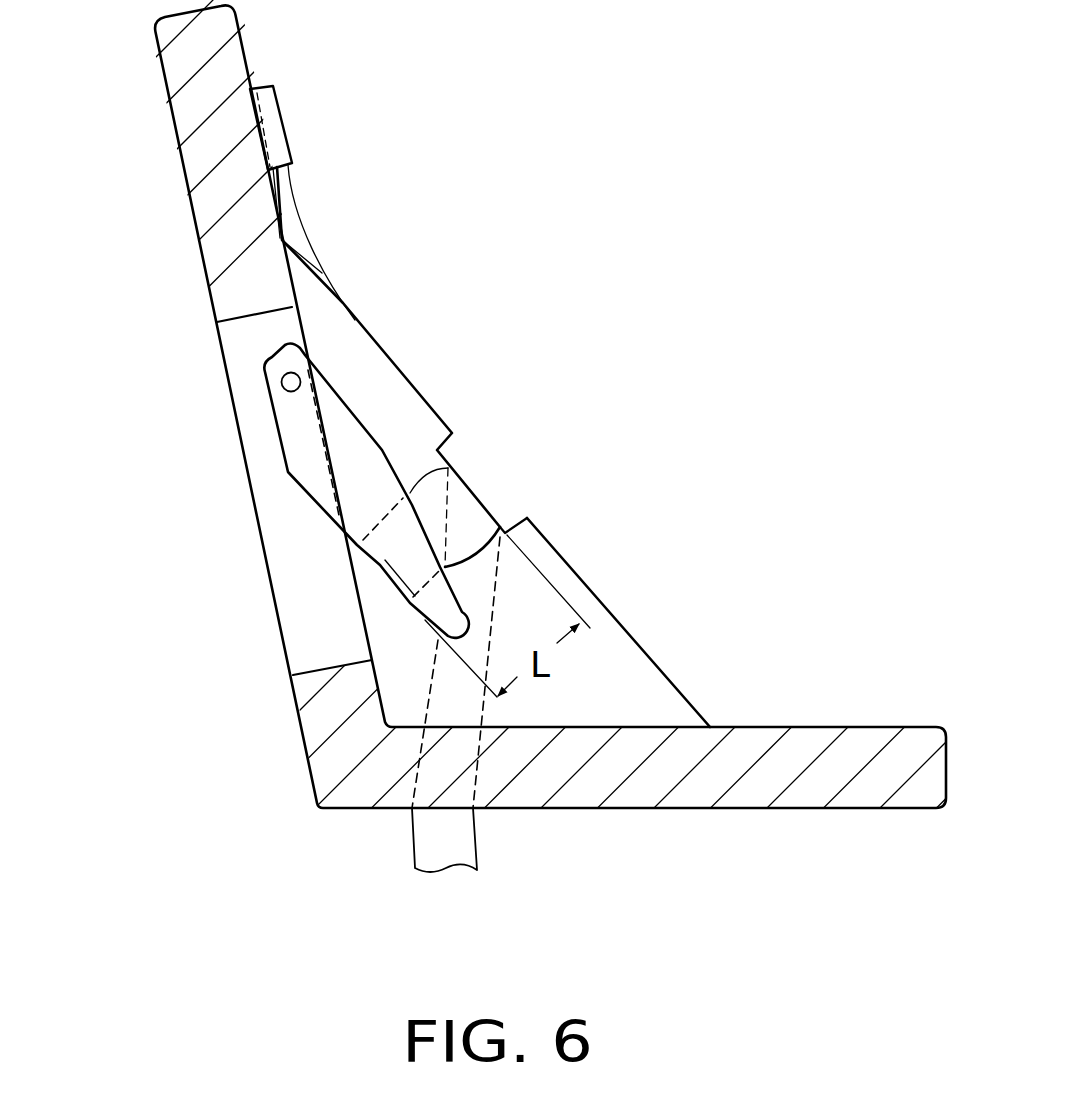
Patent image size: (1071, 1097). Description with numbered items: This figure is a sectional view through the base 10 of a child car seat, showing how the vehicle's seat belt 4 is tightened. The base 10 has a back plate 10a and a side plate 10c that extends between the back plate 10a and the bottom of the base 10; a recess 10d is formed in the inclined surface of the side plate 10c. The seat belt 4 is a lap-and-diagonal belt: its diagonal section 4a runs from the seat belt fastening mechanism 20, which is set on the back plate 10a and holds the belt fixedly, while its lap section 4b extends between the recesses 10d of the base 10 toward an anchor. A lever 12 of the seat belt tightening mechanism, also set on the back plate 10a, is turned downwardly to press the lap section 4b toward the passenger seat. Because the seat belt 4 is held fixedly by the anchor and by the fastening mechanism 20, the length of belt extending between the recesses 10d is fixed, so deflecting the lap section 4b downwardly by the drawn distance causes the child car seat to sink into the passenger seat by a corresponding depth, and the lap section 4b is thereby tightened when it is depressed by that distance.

The base 10 is at (176, 159).
The back plate 10a is at (205, 209).
The side plate 10c is at (640, 645).
The recess 10d is at (513, 518).
The seat belt fastening mechanism 20 is at (289, 94).
The seat belt 4 is at (430, 486).
The diagonal section 4a is at (327, 273).
The lap section 4b is at (532, 300).
The lever 12 is at (297, 443).